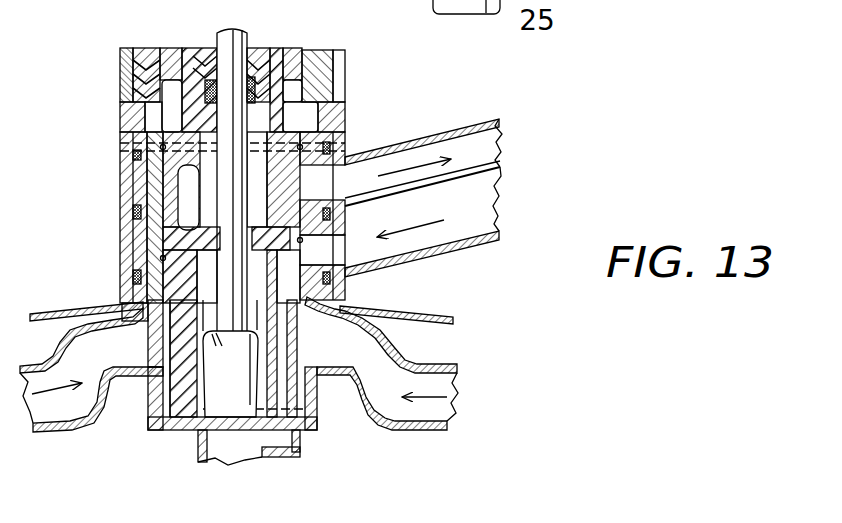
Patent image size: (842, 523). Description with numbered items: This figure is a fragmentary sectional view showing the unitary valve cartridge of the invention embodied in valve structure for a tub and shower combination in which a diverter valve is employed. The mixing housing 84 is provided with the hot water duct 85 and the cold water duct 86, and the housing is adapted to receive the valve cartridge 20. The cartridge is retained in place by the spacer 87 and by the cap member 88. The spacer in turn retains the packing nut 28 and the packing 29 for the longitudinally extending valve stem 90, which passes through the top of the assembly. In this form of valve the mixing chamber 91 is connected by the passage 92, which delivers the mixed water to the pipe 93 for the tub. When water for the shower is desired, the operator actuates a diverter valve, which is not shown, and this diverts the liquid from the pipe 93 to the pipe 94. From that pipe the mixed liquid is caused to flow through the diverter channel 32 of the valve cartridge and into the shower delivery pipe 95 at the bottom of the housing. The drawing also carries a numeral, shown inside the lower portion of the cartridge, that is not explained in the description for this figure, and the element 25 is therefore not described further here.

The valve stem 90 is at (228, 45).
The packing nut 28 is at (255, 48).
The packing 29 is at (217, 92).
The mixing housing 84 is at (142, 170).
The cap member 88 is at (327, 68).
The spacer 87 is at (263, 118).
The passage 92 is at (333, 168).
The pipe for the tub 93 is at (477, 150).
The pipe 94 is at (478, 208).
The valve cartridge 20 is at (184, 302).
The mixing chamber 91 is at (207, 268).
The diverter channel 32 is at (283, 338).
The valve spool 25 is at (211, 400).
The shower delivery pipe 95 is at (300, 446).
The hot water duct 85 is at (35, 432).
The cold water duct 86 is at (452, 432).